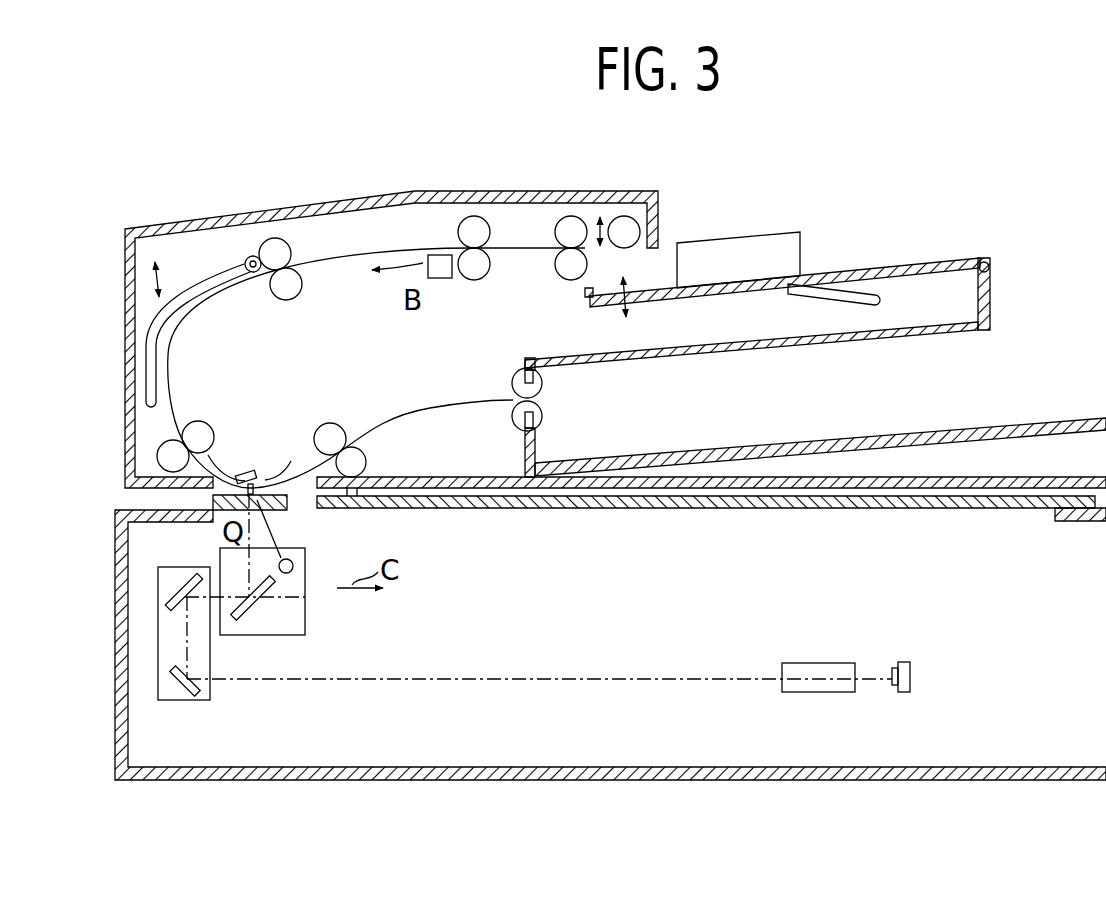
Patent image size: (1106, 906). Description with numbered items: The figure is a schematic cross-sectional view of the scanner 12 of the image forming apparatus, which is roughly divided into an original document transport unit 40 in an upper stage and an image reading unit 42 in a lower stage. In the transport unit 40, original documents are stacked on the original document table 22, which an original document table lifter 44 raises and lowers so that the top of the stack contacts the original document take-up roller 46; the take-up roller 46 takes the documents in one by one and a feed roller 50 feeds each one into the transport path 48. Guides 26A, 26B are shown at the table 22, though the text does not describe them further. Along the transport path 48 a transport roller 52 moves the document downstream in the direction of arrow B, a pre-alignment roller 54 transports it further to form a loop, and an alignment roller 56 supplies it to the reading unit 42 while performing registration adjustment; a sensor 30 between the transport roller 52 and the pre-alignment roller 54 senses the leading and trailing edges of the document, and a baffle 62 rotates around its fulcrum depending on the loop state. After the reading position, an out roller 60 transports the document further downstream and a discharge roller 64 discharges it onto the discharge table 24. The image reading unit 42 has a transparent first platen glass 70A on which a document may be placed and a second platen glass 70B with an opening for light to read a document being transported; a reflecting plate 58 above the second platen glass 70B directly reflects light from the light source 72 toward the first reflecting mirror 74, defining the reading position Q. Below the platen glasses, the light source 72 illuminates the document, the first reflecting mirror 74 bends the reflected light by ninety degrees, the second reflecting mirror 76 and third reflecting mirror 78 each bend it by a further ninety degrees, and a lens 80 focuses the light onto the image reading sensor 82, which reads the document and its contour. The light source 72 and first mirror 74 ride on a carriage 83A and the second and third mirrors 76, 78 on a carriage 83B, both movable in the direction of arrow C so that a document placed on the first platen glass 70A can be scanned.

The scanner 12 is at (777, 207).
The original document table 22 is at (938, 259).
The discharge table 24 is at (828, 441).
The side guide 26A is at (802, 252).
The side guide 26B is at (809, 245).
The sensor 30 is at (440, 280).
The original document transport unit 40 is at (125, 372).
The image reading unit 42 is at (1016, 781).
The original document table lifter 44 is at (815, 299).
The original document take-up roller 46 is at (648, 229).
The transport path 48 is at (357, 254).
The feed roller 50 is at (571, 214).
The transport roller 52 is at (455, 231).
The pre-alignment roller 54 is at (293, 302).
The alignment roller 56 is at (203, 420).
The reflecting plate 58 is at (253, 471).
The out roller 60 is at (340, 421).
The baffle 62 is at (198, 290).
The discharge roller 64 is at (545, 388).
The first platen glass 70A is at (828, 509).
The second platen glass 70B is at (273, 518).
The light source 72 is at (294, 566).
The first reflecting mirror 74 is at (276, 590).
The second reflecting mirror 76 is at (178, 584).
The third reflecting mirror 78 is at (176, 688).
The lens 80 is at (807, 693).
The image reading sensor 82 is at (903, 693).
The carriage 83A is at (300, 606).
The carriage 83B is at (221, 634).